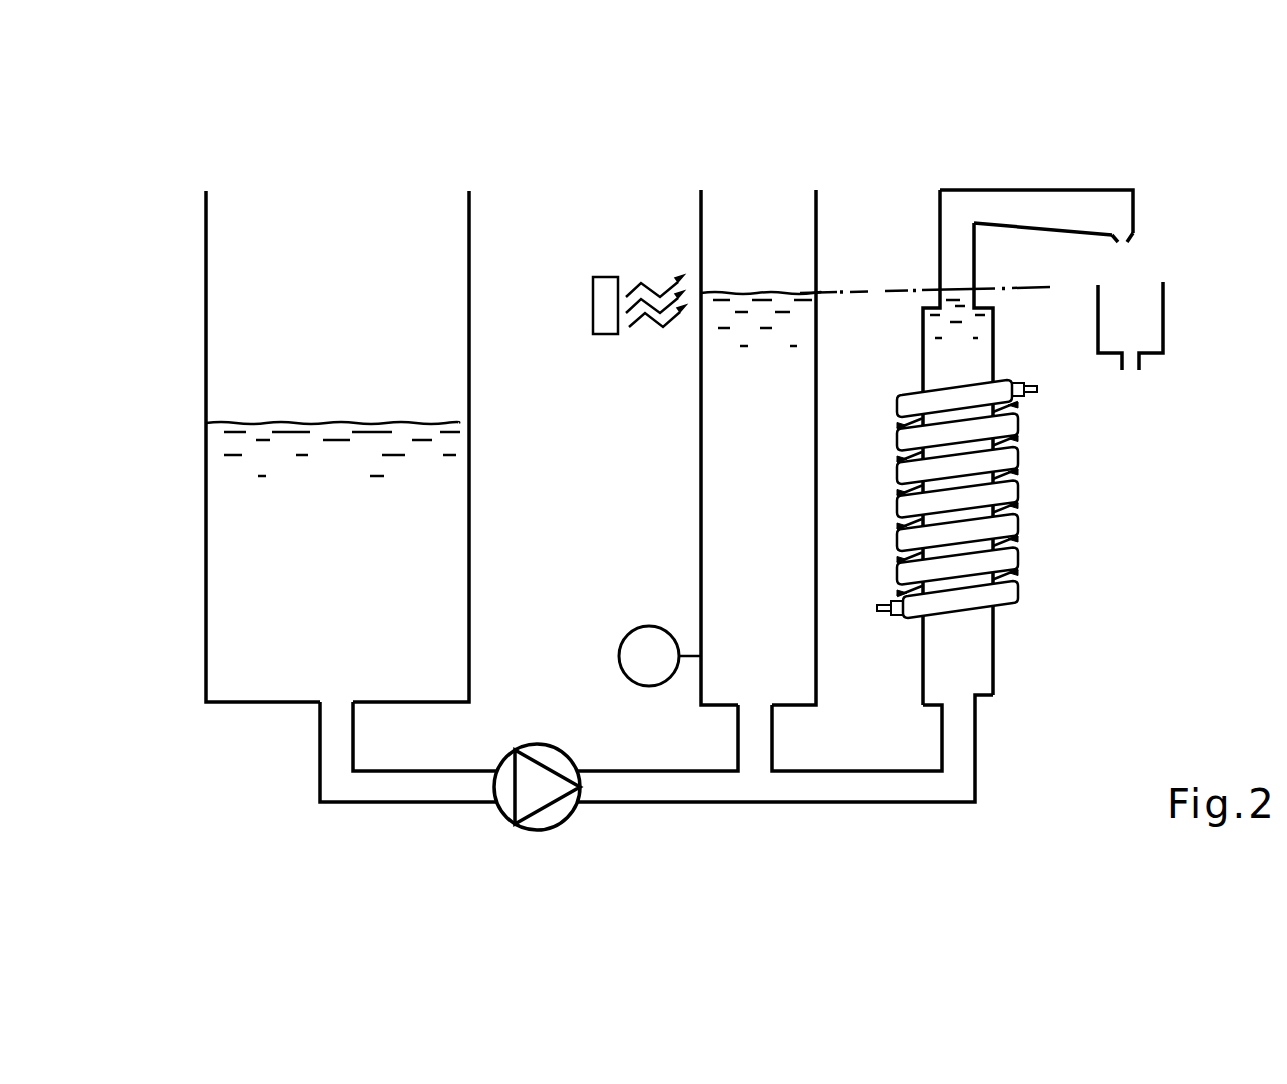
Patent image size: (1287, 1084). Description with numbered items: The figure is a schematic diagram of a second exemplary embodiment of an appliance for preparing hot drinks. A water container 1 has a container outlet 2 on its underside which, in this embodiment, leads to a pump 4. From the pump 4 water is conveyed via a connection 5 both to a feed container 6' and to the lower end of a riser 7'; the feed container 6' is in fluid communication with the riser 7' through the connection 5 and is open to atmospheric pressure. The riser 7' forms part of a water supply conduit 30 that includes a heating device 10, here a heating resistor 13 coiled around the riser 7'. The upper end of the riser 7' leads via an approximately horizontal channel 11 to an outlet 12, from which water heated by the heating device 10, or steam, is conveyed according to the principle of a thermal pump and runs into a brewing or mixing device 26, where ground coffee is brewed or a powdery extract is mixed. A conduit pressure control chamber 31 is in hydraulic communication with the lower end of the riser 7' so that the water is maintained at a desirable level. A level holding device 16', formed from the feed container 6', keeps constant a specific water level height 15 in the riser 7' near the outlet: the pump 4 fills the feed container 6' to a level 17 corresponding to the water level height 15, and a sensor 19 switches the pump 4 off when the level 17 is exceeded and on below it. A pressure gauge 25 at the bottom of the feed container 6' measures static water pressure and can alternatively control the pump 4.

The water container 1 is at (240, 478).
The container outlet 2 is at (330, 738).
The pump 4 is at (503, 825).
The connection 5 is at (813, 787).
The feed container 6' is at (724, 447).
The riser 7' is at (1005, 447).
The heating device 10 is at (1017, 499).
The channel 11 is at (1063, 203).
The outlet 12 is at (1120, 242).
The heating resistor 13 is at (1020, 561).
The specific water level height 15 is at (1020, 285).
The level holding device 16' is at (609, 278).
The level 17 is at (856, 292).
The sensor 19 is at (607, 326).
The pressure gauge 25 is at (632, 635).
The brewing or mixing device 26 is at (1163, 303).
The water supply conduit 30 is at (625, 837).
The conduit pressure control chamber 31 is at (347, 140).